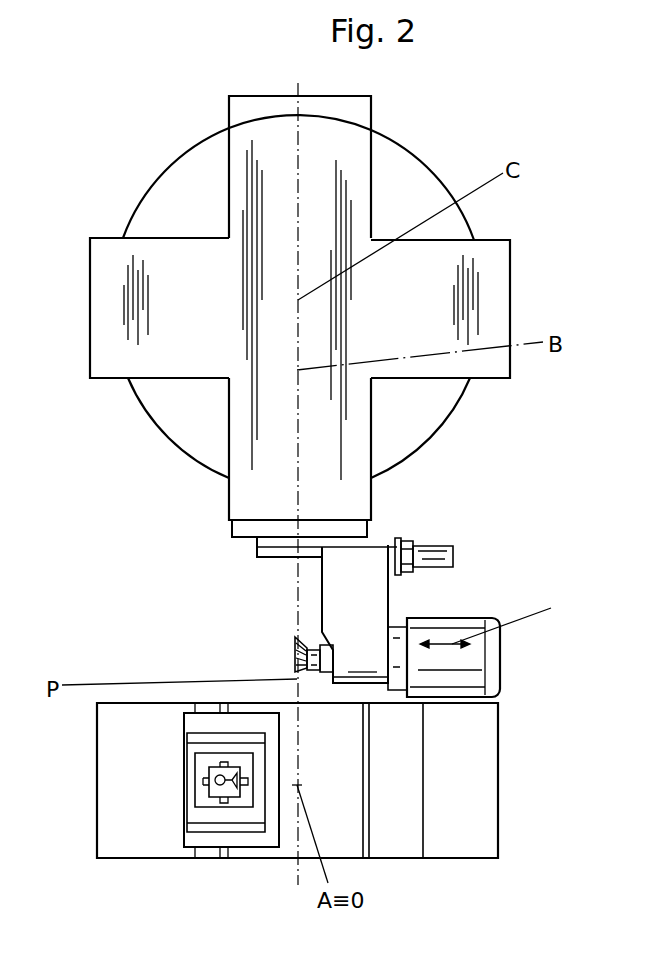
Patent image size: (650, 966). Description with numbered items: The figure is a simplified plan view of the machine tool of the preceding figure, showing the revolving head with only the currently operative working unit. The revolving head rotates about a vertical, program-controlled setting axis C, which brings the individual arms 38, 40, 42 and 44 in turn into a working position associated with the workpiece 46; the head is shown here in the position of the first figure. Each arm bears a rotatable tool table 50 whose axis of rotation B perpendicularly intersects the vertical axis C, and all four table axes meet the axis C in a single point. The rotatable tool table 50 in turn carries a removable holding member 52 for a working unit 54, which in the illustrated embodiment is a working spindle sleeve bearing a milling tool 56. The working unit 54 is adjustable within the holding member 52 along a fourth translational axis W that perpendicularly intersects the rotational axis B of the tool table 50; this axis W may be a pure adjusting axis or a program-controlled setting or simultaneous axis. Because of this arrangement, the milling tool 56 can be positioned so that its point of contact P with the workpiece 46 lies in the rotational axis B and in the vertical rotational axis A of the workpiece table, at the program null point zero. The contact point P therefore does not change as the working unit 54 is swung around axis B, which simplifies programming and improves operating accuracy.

The arm 38 is at (348, 495).
The arm 40 is at (107, 352).
The arm 42 is at (250, 110).
The arm 44 is at (493, 287).
The workpiece 46 is at (215, 790).
The rotatable tool table 50 is at (247, 528).
The removable holding member 52 is at (372, 598).
The working unit 54 is at (460, 677).
The milling tool 56 is at (295, 648).